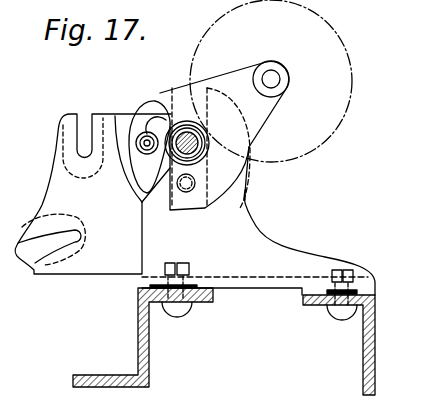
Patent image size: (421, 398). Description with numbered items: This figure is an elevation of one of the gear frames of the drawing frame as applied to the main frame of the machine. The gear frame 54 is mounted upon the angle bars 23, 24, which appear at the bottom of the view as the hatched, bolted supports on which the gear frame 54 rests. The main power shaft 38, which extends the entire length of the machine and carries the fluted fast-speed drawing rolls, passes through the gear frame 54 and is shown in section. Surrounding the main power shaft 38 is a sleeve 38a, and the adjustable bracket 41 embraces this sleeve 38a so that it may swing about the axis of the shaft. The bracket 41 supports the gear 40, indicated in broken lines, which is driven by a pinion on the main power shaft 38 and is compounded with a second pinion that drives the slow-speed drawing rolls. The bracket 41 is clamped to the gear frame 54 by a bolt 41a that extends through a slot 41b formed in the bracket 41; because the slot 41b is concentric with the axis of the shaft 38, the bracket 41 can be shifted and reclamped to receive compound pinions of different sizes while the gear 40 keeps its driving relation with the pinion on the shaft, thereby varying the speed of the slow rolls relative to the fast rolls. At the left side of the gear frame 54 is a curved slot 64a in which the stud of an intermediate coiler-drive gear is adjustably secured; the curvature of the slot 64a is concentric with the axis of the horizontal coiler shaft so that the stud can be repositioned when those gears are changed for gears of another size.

The gear 40 is at (348, 52).
The adjustable bracket 41 is at (227, 73).
The bolt 41a is at (142, 134).
The slot 41b is at (157, 110).
The main power shaft 38 is at (200, 144).
The sleeve 38a is at (182, 200).
The gear frame 54 is at (262, 222).
The slot 64a is at (48, 261).
The angle bar 23 is at (150, 352).
The angle bar 24 is at (363, 346).